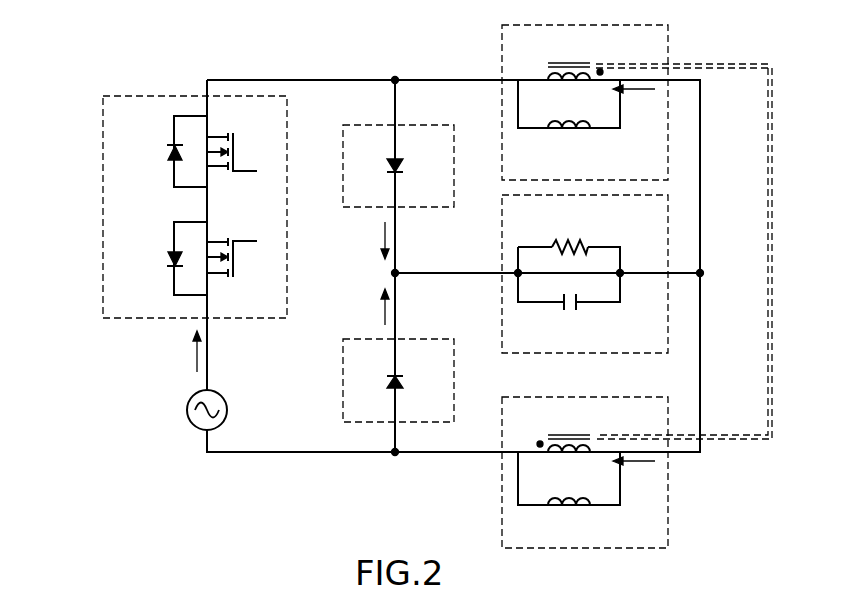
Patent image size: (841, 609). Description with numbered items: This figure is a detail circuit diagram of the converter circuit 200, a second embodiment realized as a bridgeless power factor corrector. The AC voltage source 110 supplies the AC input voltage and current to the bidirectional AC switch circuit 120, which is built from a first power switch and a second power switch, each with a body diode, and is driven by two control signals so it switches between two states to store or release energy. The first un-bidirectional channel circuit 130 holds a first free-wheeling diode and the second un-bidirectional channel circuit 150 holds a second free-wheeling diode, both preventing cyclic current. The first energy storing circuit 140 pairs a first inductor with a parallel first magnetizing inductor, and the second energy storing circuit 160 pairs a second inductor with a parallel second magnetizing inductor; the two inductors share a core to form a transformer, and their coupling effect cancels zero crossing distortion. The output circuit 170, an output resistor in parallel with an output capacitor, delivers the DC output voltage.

The converter circuit 200 is at (76, 28).
The AC voltage source 110 is at (221, 397).
The bidirectional AC switch circuit 120 is at (157, 96).
The first un-bidirectional channel circuit 130 is at (373, 124).
The first energy storing circuit 140 is at (668, 45).
The second un-bidirectional channel circuit 150 is at (373, 424).
The second energy storing circuit 160 is at (668, 417).
The output circuit 170 is at (668, 223).